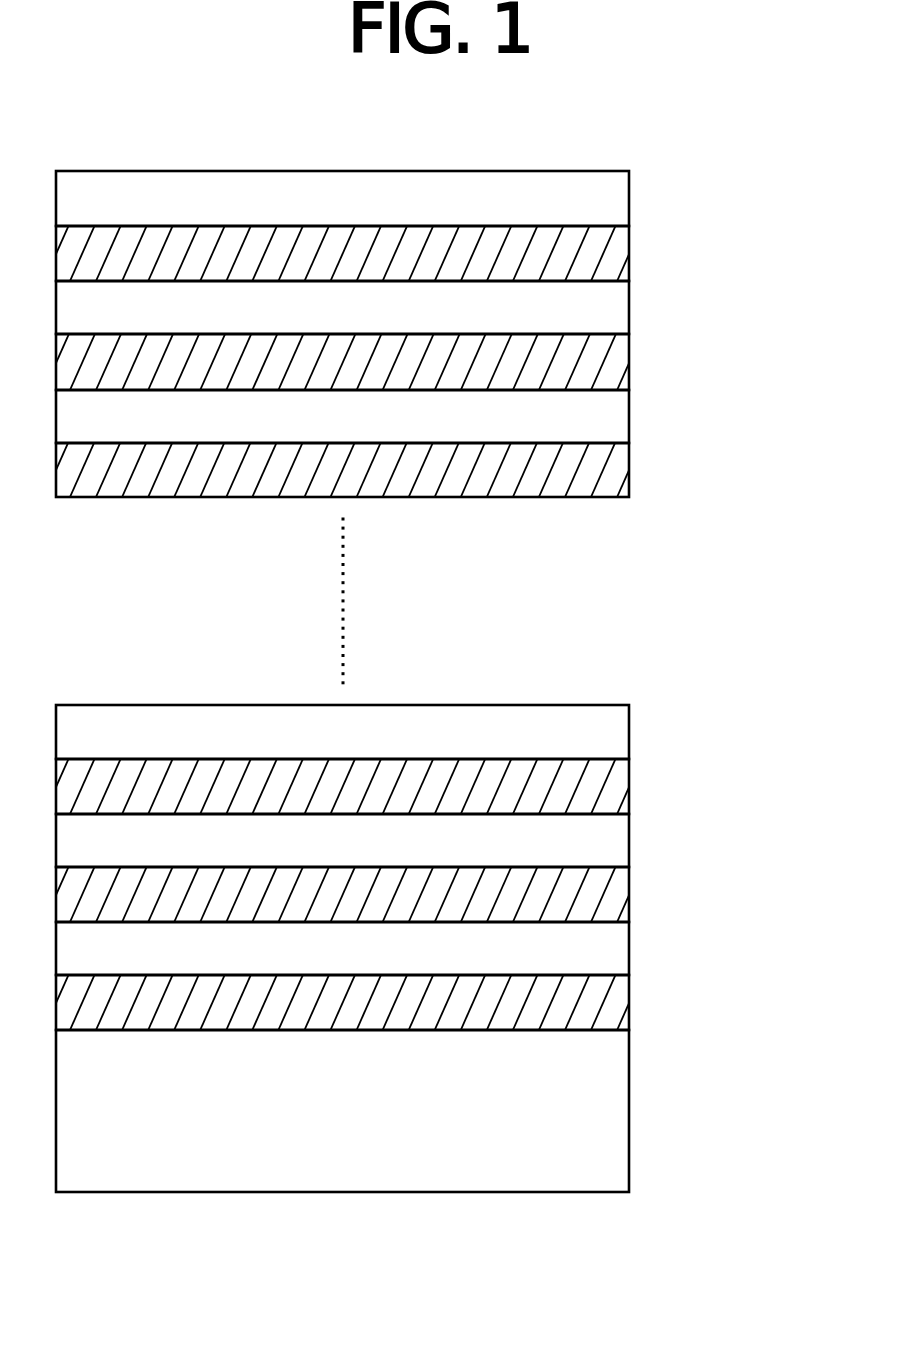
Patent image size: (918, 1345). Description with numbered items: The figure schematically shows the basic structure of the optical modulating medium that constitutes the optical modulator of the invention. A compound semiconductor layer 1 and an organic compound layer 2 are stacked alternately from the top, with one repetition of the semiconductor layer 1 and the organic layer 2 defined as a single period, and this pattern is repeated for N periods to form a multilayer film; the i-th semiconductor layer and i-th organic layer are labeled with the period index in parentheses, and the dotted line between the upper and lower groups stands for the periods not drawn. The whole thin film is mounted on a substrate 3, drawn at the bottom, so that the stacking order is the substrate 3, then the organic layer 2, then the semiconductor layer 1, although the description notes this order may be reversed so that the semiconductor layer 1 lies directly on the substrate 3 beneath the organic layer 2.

The compound semiconductor layer 1 is at (631, 193).
The organic compound layer 2 is at (631, 252).
The substrate 3 is at (631, 1105).